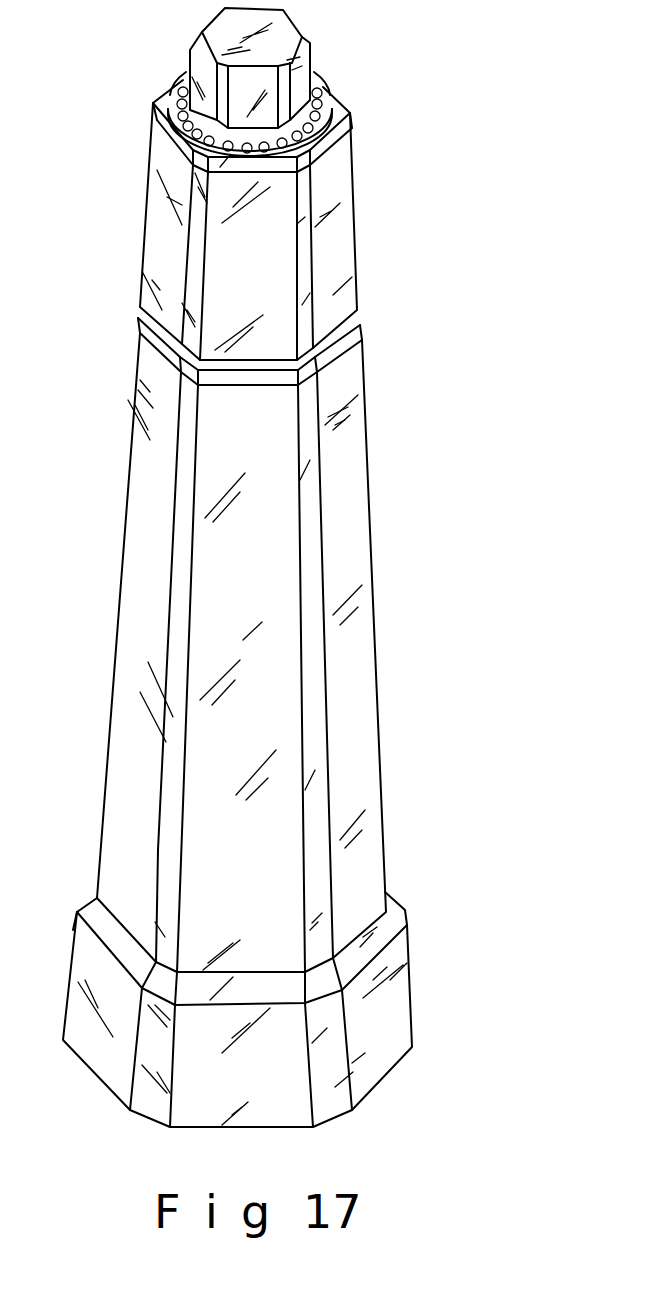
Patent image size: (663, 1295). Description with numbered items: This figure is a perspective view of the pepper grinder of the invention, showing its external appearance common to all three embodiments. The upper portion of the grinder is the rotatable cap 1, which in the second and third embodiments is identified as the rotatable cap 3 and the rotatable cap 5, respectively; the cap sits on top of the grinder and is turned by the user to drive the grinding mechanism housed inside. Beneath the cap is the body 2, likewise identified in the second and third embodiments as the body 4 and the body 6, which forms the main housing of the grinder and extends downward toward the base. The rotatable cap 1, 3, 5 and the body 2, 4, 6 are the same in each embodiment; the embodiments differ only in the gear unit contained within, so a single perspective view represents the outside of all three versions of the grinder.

The rotatable cap 1 is at (337, 220).
The rotatable cap 3 is at (248, 220).
The rotatable cap 5 is at (345, 242).
The body 2 is at (311, 722).
The body 4 is at (237, 722).
The body 6 is at (355, 565).